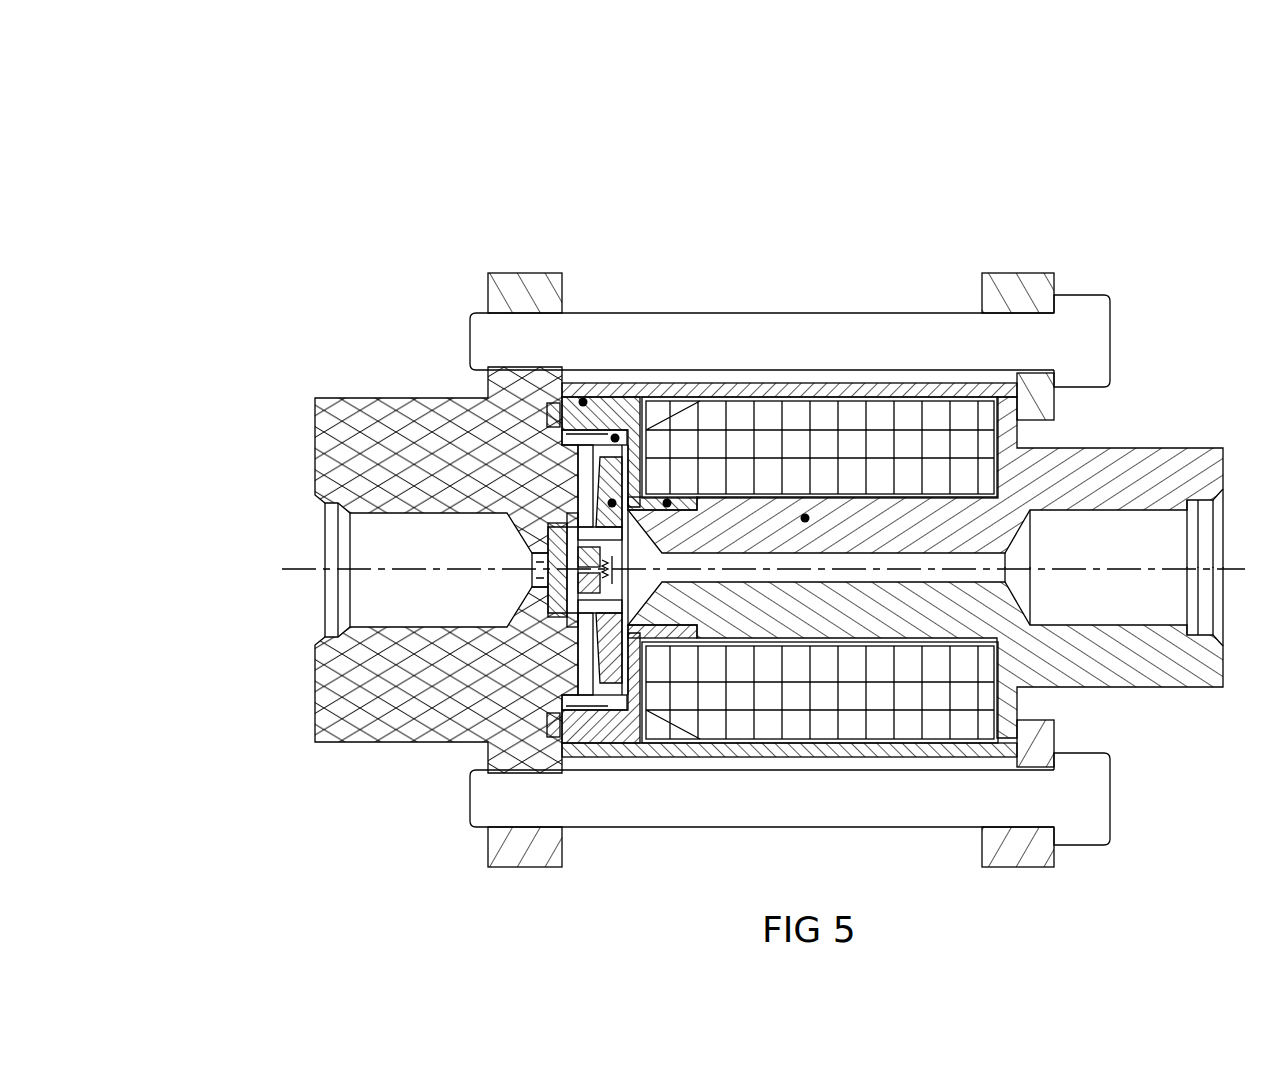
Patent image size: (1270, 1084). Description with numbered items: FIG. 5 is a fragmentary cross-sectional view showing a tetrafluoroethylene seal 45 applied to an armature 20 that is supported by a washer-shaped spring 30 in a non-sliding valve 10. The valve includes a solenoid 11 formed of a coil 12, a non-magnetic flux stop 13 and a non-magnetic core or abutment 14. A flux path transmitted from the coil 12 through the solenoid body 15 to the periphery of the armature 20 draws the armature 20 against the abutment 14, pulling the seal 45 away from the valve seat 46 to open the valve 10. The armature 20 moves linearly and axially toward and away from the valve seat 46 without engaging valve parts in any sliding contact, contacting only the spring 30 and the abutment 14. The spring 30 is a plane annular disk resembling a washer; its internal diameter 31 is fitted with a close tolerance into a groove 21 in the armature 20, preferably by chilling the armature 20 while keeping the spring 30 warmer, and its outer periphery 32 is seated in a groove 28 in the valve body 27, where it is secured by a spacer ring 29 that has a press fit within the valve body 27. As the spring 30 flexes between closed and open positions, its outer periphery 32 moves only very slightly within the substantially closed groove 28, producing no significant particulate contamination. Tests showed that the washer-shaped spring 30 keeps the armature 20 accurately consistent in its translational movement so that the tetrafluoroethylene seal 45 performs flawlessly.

The non-sliding valve 10 is at (522, 230).
The solenoid 11 is at (873, 283).
The coil 12 is at (808, 427).
The non-magnetic flux stop 13 is at (805, 518).
The non-magnetic core or abutment 14 is at (667, 503).
The solenoid body 15 is at (583, 402).
The armature 20 is at (612, 503).
The groove in armature 21 is at (530, 590).
The valve body 27 is at (615, 438).
The groove 28 is at (600, 430).
The spacer ring 29 is at (555, 435).
The spring 30 is at (582, 460).
The internal diameter 31 is at (587, 523).
The outer periphery 32 is at (602, 430).
The seal 45 is at (556, 537).
The valve seat 46 is at (533, 565).